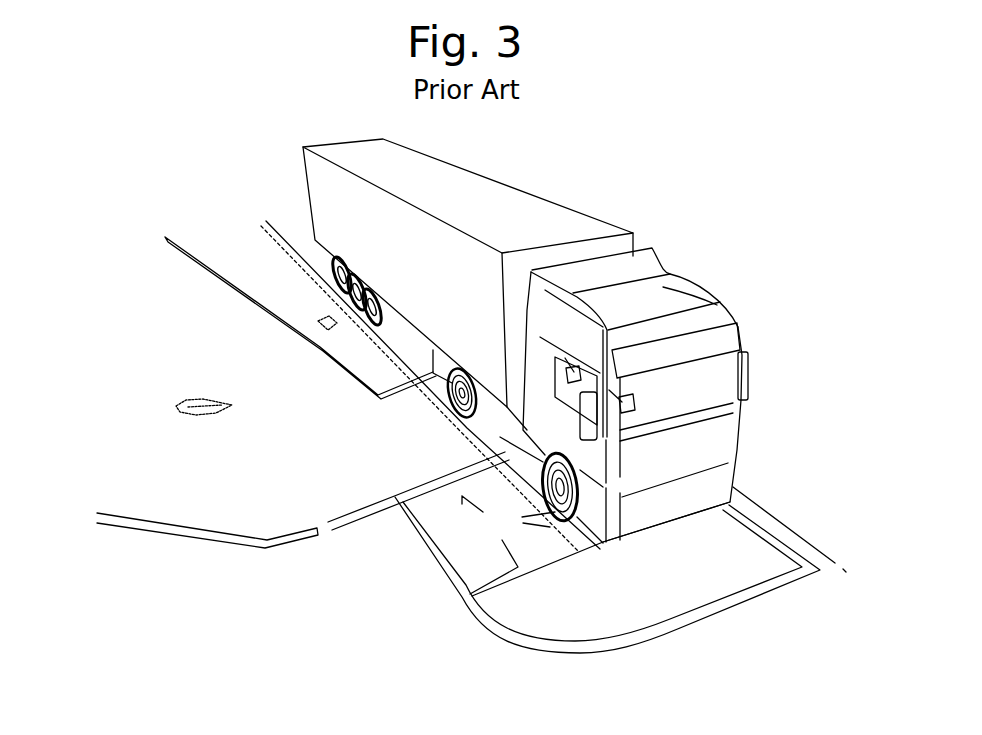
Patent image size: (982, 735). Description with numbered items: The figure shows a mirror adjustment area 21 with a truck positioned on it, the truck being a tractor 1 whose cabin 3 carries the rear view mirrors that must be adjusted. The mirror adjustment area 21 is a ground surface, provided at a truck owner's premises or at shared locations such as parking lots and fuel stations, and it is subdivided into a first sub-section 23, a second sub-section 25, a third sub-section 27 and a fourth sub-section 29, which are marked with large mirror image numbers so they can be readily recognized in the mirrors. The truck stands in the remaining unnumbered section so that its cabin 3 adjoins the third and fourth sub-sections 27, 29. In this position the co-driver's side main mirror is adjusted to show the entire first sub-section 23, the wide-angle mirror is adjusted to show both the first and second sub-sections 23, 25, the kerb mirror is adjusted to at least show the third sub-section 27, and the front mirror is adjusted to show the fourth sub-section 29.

The tractor 1 is at (525, 326).
The cabin 3 is at (683, 300).
The mirror adjustment area 21 is at (471, 464).
The first sub-section 23 is at (253, 267).
The second sub-section 25 is at (190, 380).
The third sub-section 27 is at (488, 555).
The fourth sub-section 29 is at (631, 615).